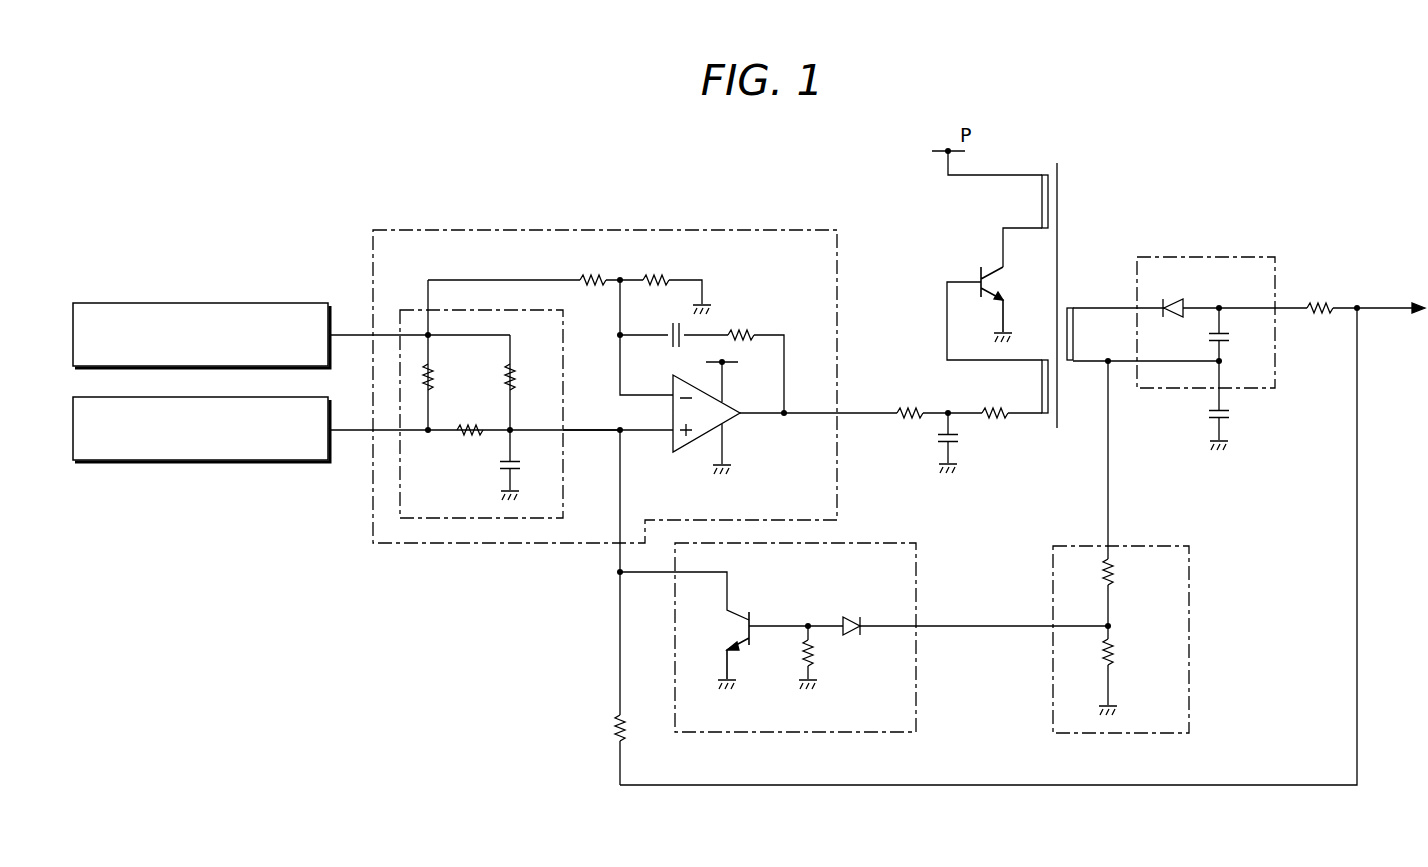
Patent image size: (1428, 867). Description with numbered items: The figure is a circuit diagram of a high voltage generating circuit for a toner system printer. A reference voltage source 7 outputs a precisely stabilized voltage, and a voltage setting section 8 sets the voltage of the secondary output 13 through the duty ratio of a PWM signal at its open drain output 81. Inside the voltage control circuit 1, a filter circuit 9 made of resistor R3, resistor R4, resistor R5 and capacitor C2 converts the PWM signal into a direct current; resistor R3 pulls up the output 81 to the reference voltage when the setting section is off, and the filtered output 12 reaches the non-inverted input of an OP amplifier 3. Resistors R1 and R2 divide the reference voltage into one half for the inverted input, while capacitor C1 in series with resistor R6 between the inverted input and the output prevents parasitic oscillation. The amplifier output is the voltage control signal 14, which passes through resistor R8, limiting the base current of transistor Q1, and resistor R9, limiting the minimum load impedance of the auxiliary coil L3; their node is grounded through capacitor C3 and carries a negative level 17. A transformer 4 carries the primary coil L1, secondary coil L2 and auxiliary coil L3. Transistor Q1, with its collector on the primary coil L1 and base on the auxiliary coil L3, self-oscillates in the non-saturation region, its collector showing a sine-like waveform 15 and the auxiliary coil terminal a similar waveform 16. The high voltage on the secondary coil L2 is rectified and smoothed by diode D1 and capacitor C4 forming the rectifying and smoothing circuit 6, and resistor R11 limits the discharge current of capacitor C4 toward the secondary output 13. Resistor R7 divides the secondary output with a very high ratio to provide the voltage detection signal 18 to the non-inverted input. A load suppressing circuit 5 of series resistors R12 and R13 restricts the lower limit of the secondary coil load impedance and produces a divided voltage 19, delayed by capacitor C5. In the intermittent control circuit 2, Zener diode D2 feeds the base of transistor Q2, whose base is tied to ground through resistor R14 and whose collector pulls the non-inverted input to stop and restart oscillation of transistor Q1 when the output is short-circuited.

The voltage control circuit 1 is at (580, 228).
The intermittent control circuit 2 is at (917, 560).
The OP amplifier 3 is at (737, 418).
The transformer 4 is at (1060, 200).
The load suppressing circuit 5 is at (1141, 545).
The rectifying and smoothing circuit 6 is at (1227, 256).
The reference voltage source 7 is at (259, 302).
The voltage setting section 8 is at (232, 463).
The filter circuit 9 is at (411, 309).
The output of the filter circuit 12 is at (597, 433).
The secondary output 13 is at (1377, 304).
The voltage control signal 14 is at (871, 415).
The collector voltage waveform 15 is at (1003, 247).
The auxiliary coil first terminal voltage 16 is at (947, 320).
The node level of resistors R8 and R9 17 is at (966, 416).
The voltage detection signal 18 is at (620, 619).
The divided voltage 19 is at (990, 629).
The output of the voltage setting section 81 is at (348, 433).
The resistor R1 is at (587, 266).
The resistor R2 is at (656, 267).
The resistor R3 is at (444, 378).
The resistor R4 is at (526, 378).
The resistor for a filter R5 is at (470, 444).
The resistor R6 is at (741, 322).
The resistor R7 is at (599, 750).
The resistor R8 is at (908, 400).
The resistor R9 is at (993, 400).
The resistor R11 is at (1318, 296).
The resistor R12 is at (1130, 579).
The resistor R13 is at (1130, 659).
The resistor R14 is at (829, 657).
The capacitor C1 is at (656, 345).
The capacitor for a filter C2 is at (523, 465).
The capacitor C3 is at (931, 443).
The capacitor C4 is at (1235, 336).
The capacitor C5 is at (1235, 405).
The primary coil L1 is at (1042, 206).
The secondary coil L2 is at (1075, 330).
The auxiliary coil L3 is at (1036, 405).
The transistor for oscillation Q1 is at (1008, 304).
The transistor Q2 is at (742, 638).
The diode D1 is at (1173, 295).
The Zener diode D2 is at (851, 612).